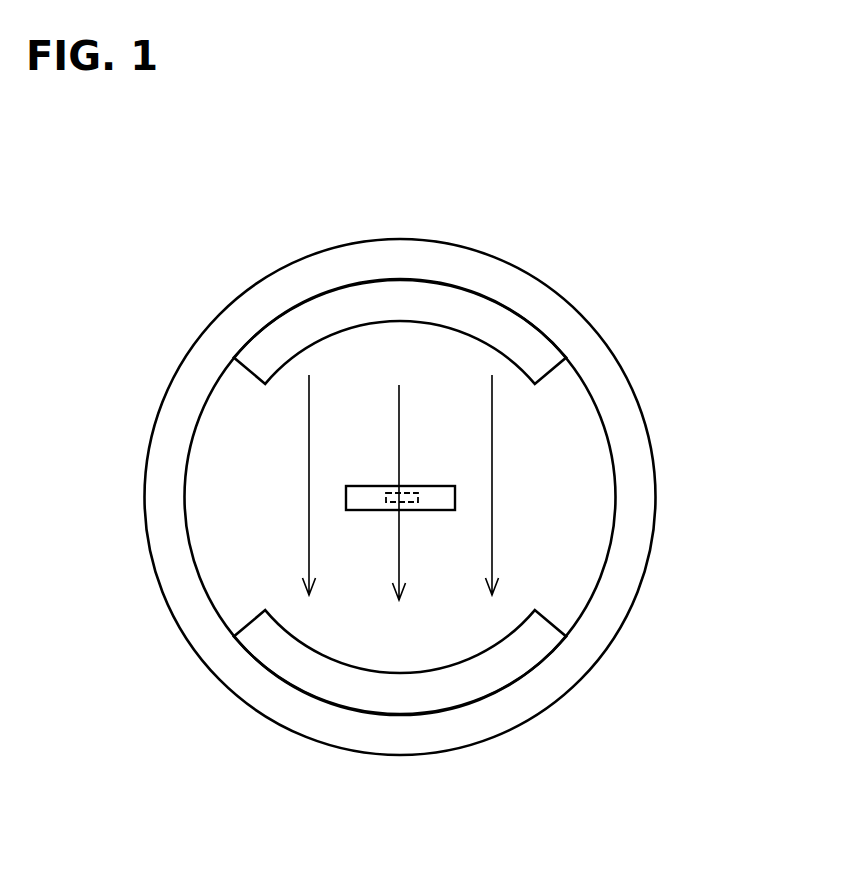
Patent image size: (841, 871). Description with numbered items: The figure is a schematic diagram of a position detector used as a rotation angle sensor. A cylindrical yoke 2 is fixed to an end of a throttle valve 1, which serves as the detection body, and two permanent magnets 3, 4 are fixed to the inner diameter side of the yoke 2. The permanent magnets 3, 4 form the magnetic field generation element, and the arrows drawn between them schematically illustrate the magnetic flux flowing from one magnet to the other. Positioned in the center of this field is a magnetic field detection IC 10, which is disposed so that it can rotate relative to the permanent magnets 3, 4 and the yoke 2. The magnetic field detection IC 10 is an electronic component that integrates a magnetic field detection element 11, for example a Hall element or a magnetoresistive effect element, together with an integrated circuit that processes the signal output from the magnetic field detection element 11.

The throttle valve 1 is at (237, 501).
The yoke 2 is at (635, 495).
The permanent magnet 3 is at (400, 296).
The permanent magnet 4 is at (405, 700).
The magnetic field detection IC 10 is at (440, 500).
The magnetic field detection element 11 is at (404, 493).